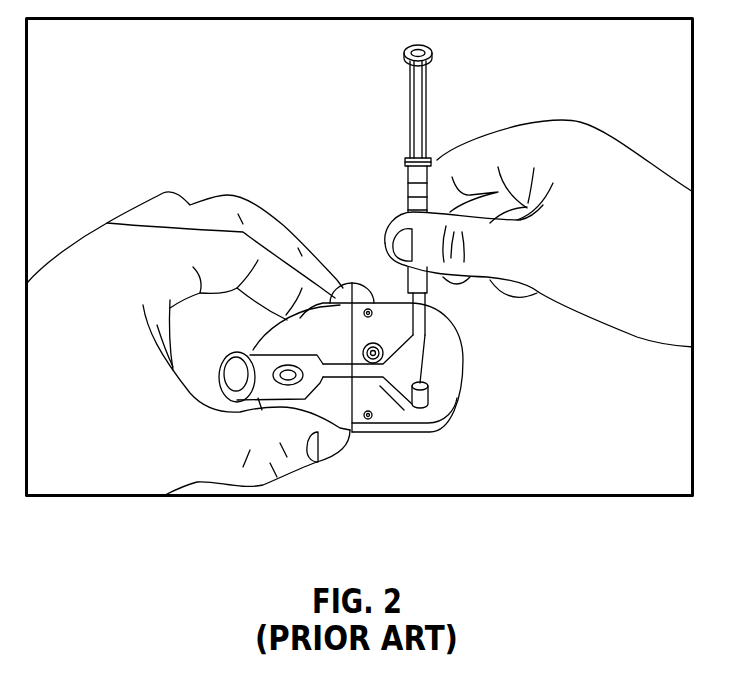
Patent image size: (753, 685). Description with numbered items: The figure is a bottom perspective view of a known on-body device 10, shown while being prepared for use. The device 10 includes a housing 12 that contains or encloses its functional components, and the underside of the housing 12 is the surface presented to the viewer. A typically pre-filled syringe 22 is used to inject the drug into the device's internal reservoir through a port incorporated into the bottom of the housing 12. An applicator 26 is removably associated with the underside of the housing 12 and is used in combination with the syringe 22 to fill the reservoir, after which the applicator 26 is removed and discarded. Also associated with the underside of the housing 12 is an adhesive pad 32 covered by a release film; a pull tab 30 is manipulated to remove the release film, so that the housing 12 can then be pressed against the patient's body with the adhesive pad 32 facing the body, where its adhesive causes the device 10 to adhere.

The on-body device 10 is at (484, 373).
The housing 12 is at (370, 433).
The syringe 22 is at (427, 105).
The applicator 26 is at (432, 397).
The pull tab 30 is at (345, 285).
The adhesive pad 32 is at (395, 410).